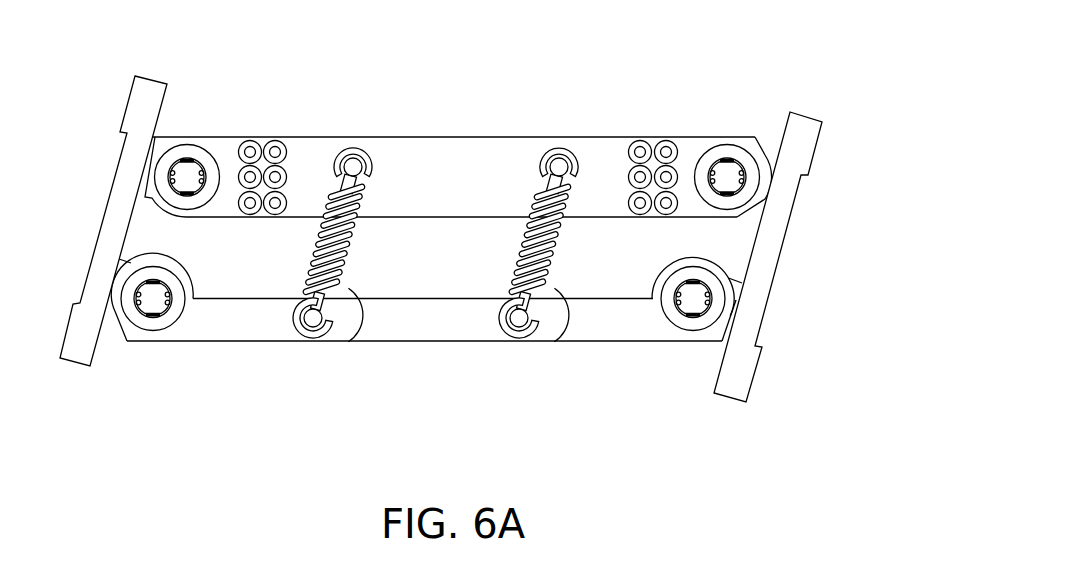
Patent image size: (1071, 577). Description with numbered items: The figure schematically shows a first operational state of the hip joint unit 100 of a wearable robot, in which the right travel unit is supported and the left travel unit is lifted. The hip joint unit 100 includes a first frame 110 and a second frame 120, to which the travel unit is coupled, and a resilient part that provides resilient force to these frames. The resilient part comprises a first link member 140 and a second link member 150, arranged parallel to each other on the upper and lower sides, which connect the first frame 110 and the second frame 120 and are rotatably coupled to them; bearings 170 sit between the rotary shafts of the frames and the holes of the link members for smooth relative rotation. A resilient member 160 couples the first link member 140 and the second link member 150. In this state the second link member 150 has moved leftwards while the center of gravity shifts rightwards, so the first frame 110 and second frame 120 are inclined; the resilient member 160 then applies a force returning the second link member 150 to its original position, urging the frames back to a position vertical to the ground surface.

The hip joint unit 100 is at (640, 97).
The first frame 110 is at (82, 346).
The second frame 120 is at (735, 382).
The first link member 140 is at (458, 160).
The second link member 150 is at (425, 327).
The resilient member 160 is at (362, 299).
The bearing 170 is at (211, 157).